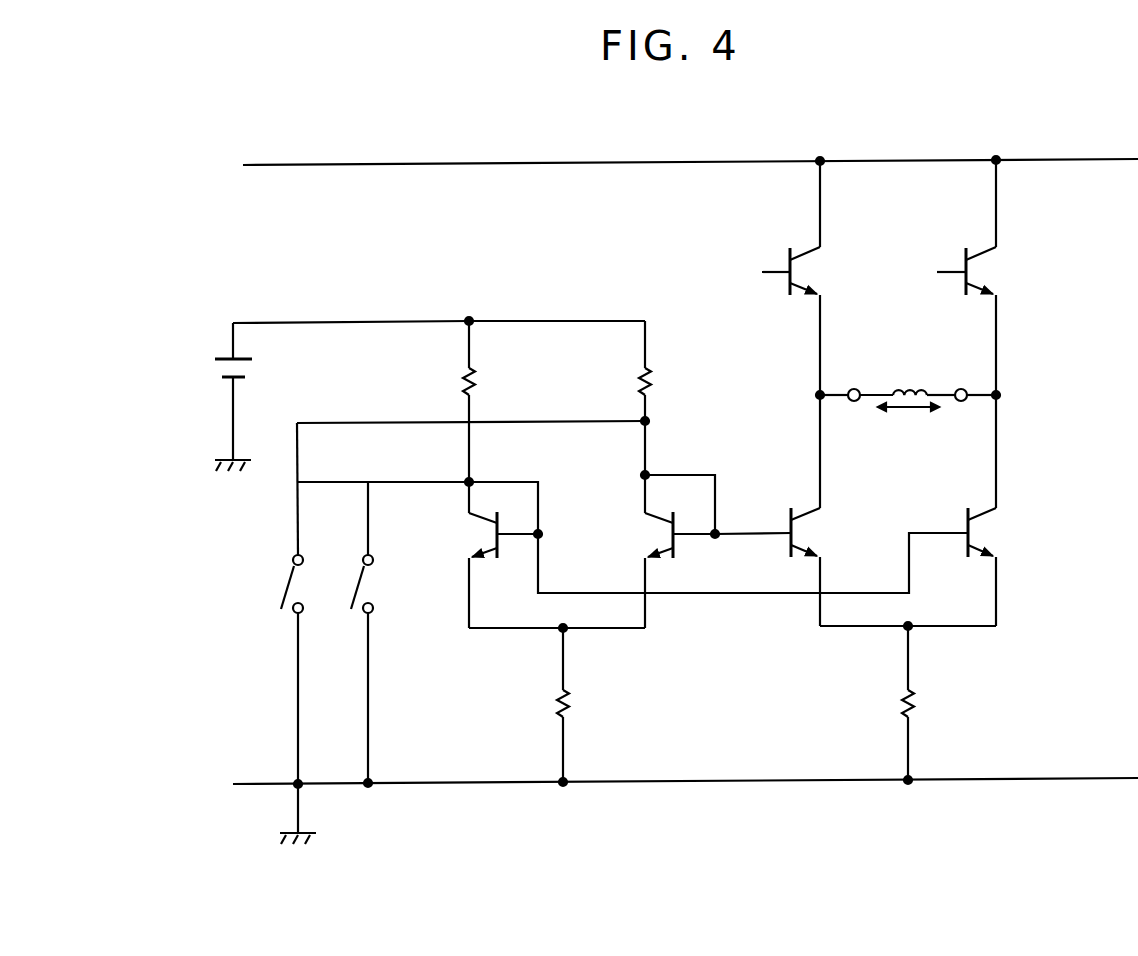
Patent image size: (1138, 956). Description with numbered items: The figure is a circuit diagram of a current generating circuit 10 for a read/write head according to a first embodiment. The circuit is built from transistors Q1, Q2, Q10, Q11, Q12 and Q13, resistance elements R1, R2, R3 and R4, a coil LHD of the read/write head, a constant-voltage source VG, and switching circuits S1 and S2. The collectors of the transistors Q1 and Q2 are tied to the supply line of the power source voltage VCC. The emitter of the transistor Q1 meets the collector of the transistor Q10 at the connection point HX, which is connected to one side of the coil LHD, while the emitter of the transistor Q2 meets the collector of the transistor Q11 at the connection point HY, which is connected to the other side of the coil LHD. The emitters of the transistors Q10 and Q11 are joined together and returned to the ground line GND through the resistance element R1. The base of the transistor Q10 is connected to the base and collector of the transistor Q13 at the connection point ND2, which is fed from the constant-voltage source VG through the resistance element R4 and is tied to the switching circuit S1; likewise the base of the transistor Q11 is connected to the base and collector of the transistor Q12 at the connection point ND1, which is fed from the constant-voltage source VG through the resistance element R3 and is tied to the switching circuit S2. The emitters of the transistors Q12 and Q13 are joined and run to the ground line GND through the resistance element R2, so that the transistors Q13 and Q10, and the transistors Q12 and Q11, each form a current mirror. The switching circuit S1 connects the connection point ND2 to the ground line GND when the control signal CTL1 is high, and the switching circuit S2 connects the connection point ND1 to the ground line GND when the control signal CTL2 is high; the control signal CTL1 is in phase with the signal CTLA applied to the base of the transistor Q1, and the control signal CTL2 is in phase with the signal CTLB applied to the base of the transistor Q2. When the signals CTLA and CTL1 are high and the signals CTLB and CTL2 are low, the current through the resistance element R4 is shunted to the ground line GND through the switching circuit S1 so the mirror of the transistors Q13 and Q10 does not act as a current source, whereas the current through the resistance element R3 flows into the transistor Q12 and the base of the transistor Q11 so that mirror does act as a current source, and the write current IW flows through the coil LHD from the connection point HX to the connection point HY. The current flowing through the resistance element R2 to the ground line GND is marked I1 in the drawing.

The current generating circuit 10 is at (152, 228).
The power source voltage supply line VCC is at (665, 167).
The ground line GND is at (657, 808).
The constant-voltage source VG is at (250, 368).
The resistance element R1 is at (916, 712).
The resistance element R2 is at (578, 708).
The resistance element R3 is at (465, 382).
The resistance element R4 is at (638, 384).
The transistor Q1 is at (796, 248).
The transistor Q2 is at (972, 248).
The transistor Q10 is at (798, 531).
The transistor Q11 is at (976, 528).
The transistor Q12 is at (480, 535).
The transistor Q13 is at (660, 535).
The switching circuit S1 is at (287, 551).
The switching circuit S2 is at (358, 548).
The control signal CTL1 is at (283, 583).
The control signal CTL2 is at (377, 583).
The signal CTLA is at (742, 272).
The signal CTLB is at (916, 272).
The connection point ND1 is at (467, 480).
The connection point ND2 is at (642, 474).
The connection point HX is at (802, 395).
The connection point HY is at (1013, 395).
The coil LHD is at (906, 384).
The write current IW is at (908, 610).
The current I1 is at (565, 805).